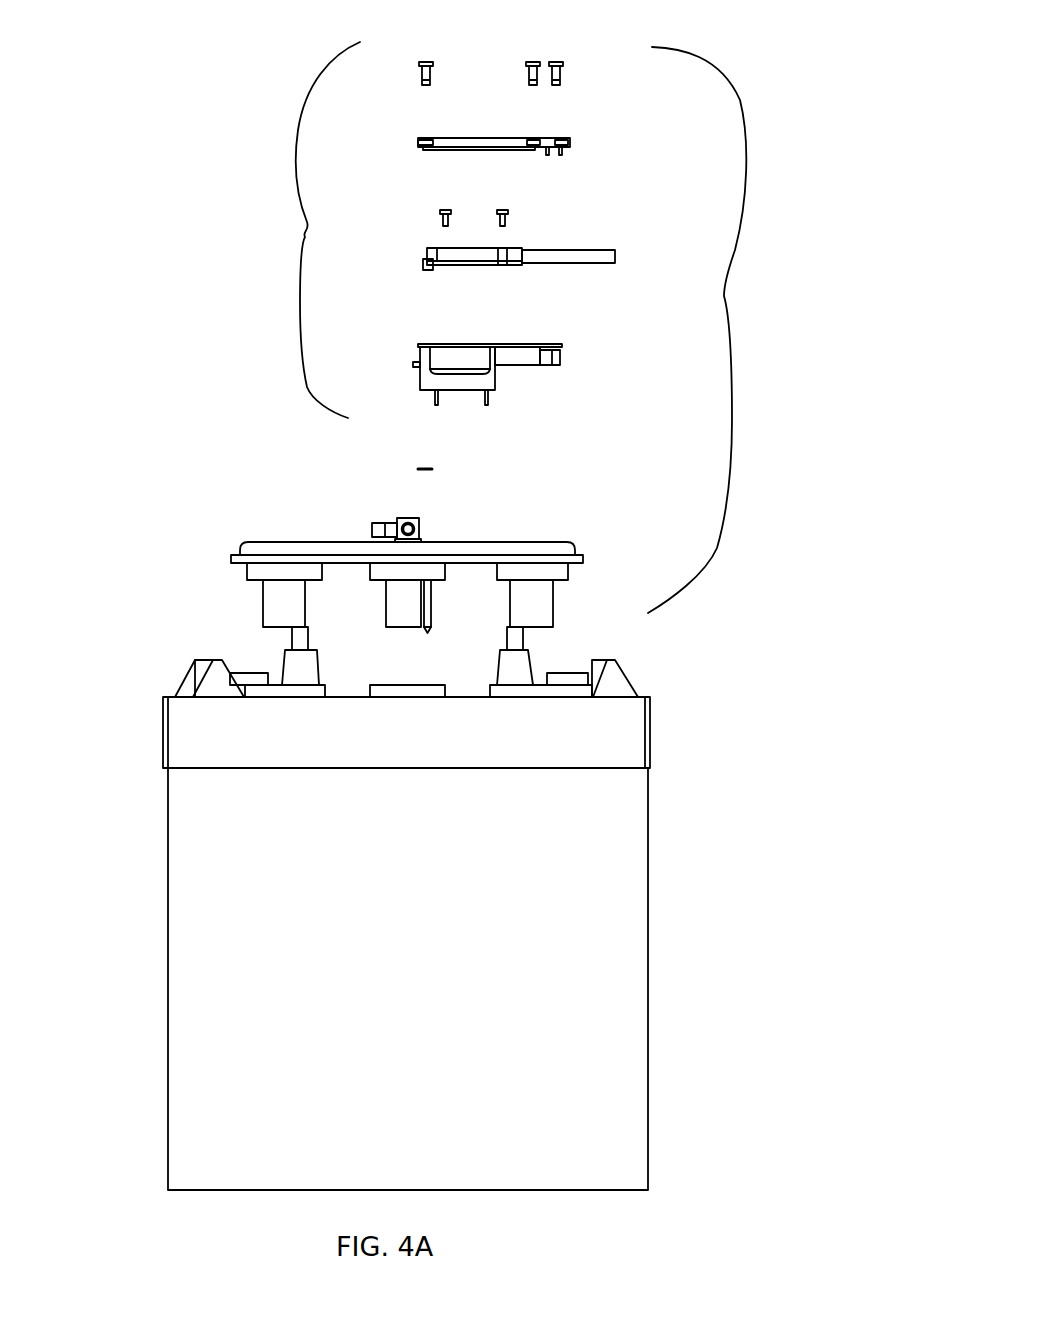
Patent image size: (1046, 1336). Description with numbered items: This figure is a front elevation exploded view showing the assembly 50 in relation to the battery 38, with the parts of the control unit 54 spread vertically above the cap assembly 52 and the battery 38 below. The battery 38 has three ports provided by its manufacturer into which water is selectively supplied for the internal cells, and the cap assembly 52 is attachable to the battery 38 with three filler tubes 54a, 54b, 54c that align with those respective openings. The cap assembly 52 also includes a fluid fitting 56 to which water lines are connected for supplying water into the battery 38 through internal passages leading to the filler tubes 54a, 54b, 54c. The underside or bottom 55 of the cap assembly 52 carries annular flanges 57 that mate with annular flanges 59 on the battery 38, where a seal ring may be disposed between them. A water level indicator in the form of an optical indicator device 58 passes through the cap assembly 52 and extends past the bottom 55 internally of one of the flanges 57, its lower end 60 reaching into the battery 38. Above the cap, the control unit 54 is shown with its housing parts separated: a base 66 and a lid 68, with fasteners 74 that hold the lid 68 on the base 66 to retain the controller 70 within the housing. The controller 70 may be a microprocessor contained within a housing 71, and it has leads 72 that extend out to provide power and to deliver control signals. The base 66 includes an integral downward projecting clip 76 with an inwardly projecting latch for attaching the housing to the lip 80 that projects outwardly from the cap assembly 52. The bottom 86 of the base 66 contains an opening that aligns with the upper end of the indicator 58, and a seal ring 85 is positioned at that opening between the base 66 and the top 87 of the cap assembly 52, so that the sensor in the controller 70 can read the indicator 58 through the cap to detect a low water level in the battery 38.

The battery 38 is at (622, 880).
The assembly 50 is at (736, 298).
The cap assembly 52 is at (391, 524).
The control unit 54 is at (292, 238).
The filler tube 54a is at (272, 597).
The filler tube 54b is at (404, 620).
The filler tube 54c is at (546, 612).
The bottom 55 is at (588, 566).
The fluid fitting 56 is at (405, 517).
The annular flanges 57 is at (262, 571).
The optical indicator device 58 is at (433, 595).
The annular flanges 59 is at (430, 686).
The lower end 60 is at (428, 633).
The base 66 is at (488, 359).
The lid 68 is at (540, 137).
The controller 70 is at (510, 237).
The housing 71 is at (511, 248).
The leads 72 is at (599, 250).
The fasteners 74 is at (435, 53).
The clip 76 is at (430, 382).
The lip 80 is at (470, 553).
The seal ring 85 is at (436, 464).
The bottom 86 is at (517, 366).
The top 87 is at (271, 541).